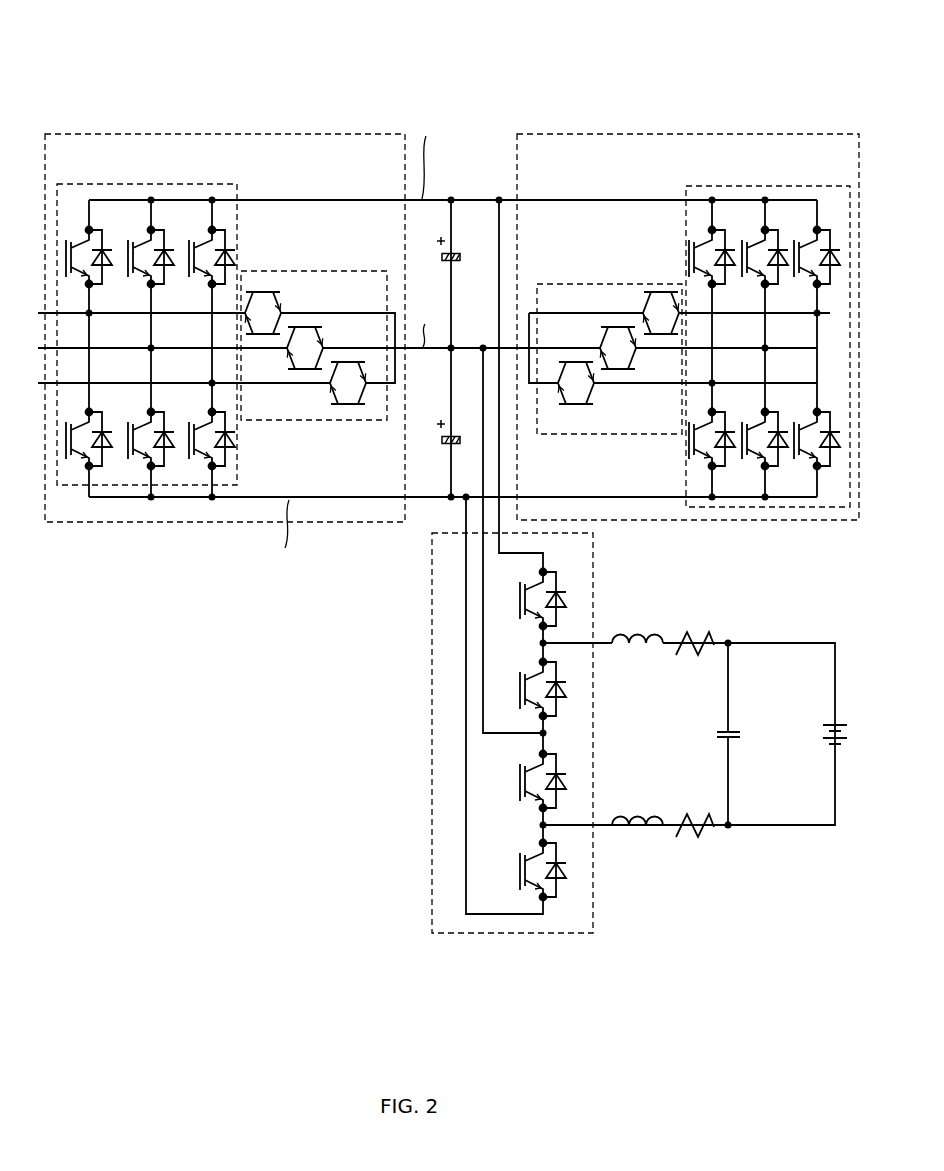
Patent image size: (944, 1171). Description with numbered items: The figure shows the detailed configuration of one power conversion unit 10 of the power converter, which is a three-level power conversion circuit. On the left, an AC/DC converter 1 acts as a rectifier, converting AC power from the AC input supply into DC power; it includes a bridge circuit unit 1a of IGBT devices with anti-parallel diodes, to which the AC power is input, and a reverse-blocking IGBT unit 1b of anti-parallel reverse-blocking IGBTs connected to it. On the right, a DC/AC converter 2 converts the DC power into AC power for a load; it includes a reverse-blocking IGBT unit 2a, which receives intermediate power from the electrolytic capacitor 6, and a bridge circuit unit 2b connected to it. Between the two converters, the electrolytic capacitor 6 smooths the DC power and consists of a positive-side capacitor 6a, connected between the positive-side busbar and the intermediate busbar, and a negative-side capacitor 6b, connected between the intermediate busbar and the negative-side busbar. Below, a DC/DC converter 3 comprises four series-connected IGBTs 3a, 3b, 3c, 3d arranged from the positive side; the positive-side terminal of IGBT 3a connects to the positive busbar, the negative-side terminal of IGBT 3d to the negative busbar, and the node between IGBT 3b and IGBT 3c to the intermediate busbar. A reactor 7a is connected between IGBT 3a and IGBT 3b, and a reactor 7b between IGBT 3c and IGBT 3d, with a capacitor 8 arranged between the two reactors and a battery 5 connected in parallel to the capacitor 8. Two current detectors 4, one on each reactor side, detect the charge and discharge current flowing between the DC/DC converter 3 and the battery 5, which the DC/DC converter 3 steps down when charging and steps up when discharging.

The power conversion unit 10 is at (66, 72).
The AC/DC converter 1 is at (337, 133).
The bridge circuit unit 1a is at (113, 183).
The reverse-blocking IGBT unit 1b is at (308, 270).
The DC/AC converter 2 is at (766, 133).
The reverse-blocking IGBT unit 2a is at (605, 284).
The bridge circuit unit 2b is at (771, 186).
The DC/DC converter 3 is at (472, 934).
The IGBT 3a is at (578, 582).
The IGBT 3b is at (576, 686).
The IGBT 3c is at (575, 778).
The IGBT 3d is at (574, 875).
The current detector 4 is at (703, 630).
The battery 5 is at (839, 723).
The electrolytic capacitor 6 is at (430, 363).
The positive-side capacitor 6a is at (453, 253).
The negative-side capacitor 6b is at (440, 446).
The reactor 7a is at (644, 628).
The reactor 7b is at (645, 832).
The capacitor 8 is at (733, 740).